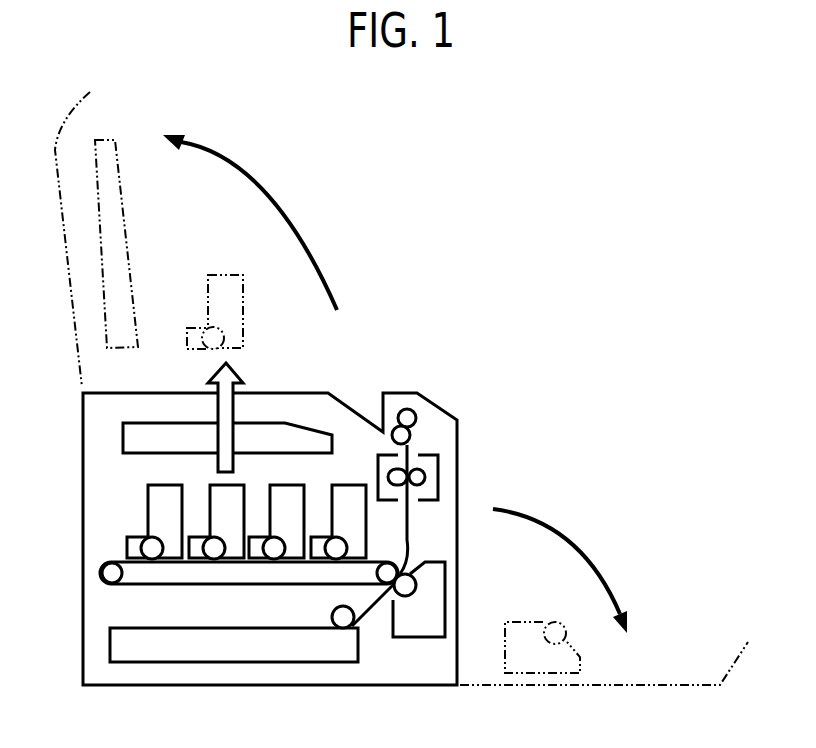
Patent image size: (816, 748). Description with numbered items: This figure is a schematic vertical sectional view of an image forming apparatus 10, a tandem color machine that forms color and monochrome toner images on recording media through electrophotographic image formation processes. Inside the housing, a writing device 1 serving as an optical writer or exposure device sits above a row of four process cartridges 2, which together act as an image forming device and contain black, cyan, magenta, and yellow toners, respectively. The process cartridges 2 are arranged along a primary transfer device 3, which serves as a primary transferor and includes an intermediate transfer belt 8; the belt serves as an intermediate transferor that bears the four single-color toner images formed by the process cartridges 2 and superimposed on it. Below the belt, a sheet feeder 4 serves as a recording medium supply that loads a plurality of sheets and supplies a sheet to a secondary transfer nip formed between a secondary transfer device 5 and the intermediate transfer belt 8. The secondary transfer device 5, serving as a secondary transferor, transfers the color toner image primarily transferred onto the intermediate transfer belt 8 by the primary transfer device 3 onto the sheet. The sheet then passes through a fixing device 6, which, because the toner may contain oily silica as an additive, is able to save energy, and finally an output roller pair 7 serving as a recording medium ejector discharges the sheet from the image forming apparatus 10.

The image forming apparatus 10 is at (420, 143).
The writing device 1 is at (123, 434).
The process cartridges 2 is at (148, 498).
The primary transfer device 3 is at (227, 594).
The sheet feeder 4 is at (230, 662).
The secondary transfer device 5 is at (422, 637).
The fixing device 6 is at (442, 474).
The output roller pair 7 is at (412, 409).
The intermediate transfer belt 8 is at (225, 584).